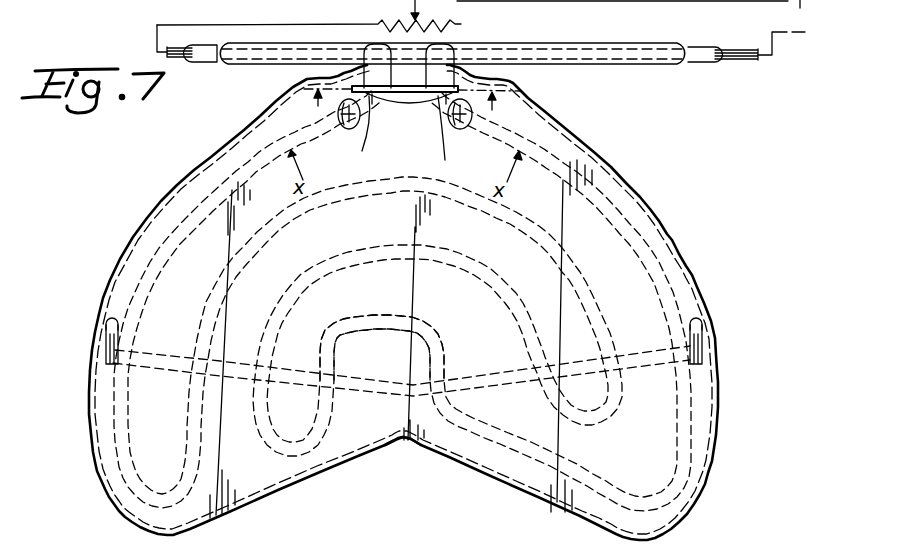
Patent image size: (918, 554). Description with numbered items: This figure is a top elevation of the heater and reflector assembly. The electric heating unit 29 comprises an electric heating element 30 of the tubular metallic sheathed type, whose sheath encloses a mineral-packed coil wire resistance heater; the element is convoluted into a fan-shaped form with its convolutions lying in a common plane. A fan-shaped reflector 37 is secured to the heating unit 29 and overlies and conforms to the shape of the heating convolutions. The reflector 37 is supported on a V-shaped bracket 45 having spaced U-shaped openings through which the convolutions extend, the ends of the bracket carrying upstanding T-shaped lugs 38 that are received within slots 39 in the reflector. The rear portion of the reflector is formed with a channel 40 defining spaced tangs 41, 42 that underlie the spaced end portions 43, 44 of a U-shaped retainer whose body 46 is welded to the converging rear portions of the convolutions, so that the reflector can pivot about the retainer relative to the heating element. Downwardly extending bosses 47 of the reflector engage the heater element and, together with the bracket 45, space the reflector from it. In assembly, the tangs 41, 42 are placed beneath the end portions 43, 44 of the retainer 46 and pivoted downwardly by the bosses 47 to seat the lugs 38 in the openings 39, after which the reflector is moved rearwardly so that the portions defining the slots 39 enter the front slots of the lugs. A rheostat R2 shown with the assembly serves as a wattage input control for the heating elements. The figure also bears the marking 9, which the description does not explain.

The electric heating unit 29 is at (667, 214).
The electric heating element 30 is at (178, 220).
The reflector 37 is at (370, 434).
The T-shaped lugs 38 is at (106, 347).
The slots 39 is at (107, 323).
The channel 40 is at (378, 93).
The tang 41 is at (330, 68).
The tang 42 is at (490, 75).
The end portion of retainer 43 is at (369, 136).
The end portion of retainer 44 is at (442, 138).
The V-shaped bracket 45 is at (298, 358).
The retainer body 46 is at (417, 102).
The bosses 47 is at (347, 129).
The section line 9- 9 is at (407, 105).
The rheostat R2 is at (478, 16).